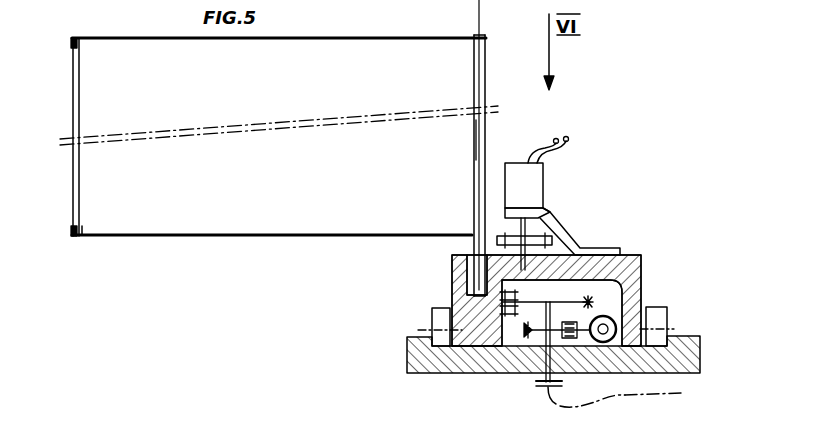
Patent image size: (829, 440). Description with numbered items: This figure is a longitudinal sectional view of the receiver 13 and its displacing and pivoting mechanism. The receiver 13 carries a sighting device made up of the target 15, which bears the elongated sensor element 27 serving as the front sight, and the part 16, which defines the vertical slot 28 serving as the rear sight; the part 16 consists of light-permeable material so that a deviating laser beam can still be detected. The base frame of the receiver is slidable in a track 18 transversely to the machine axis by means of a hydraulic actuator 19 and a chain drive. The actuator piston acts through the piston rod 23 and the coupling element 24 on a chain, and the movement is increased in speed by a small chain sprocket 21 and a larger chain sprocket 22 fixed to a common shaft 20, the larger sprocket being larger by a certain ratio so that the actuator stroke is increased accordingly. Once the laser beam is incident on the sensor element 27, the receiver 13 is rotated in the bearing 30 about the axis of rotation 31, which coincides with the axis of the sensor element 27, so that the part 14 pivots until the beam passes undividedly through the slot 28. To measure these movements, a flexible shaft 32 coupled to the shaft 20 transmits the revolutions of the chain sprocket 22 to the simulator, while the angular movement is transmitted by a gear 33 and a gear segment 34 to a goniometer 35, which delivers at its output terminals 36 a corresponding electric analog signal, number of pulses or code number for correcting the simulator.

The receiver 13 is at (279, 168).
The part 14 is at (242, 218).
The target 15 is at (480, 84).
The part defining the slot 16 is at (74, 74).
The track 18 is at (690, 358).
The hydraulic actuator 19 is at (641, 286).
The common shaft 20 is at (544, 338).
The small chain sprocket 21 is at (527, 340).
The chain sprocket 22 is at (576, 300).
The piston rod 23 is at (648, 312).
The coupling element 24 is at (564, 395).
The elongated sensor element 27 is at (473, 144).
The slot 28 is at (74, 196).
The bearing 30 is at (466, 274).
The axis of rotation 31 is at (479, 11).
The flexible shaft 32 is at (632, 397).
The gear 33 is at (538, 236).
The gear segment 34 is at (496, 239).
The goniometer 35 is at (536, 181).
The output terminals 36 is at (565, 144).